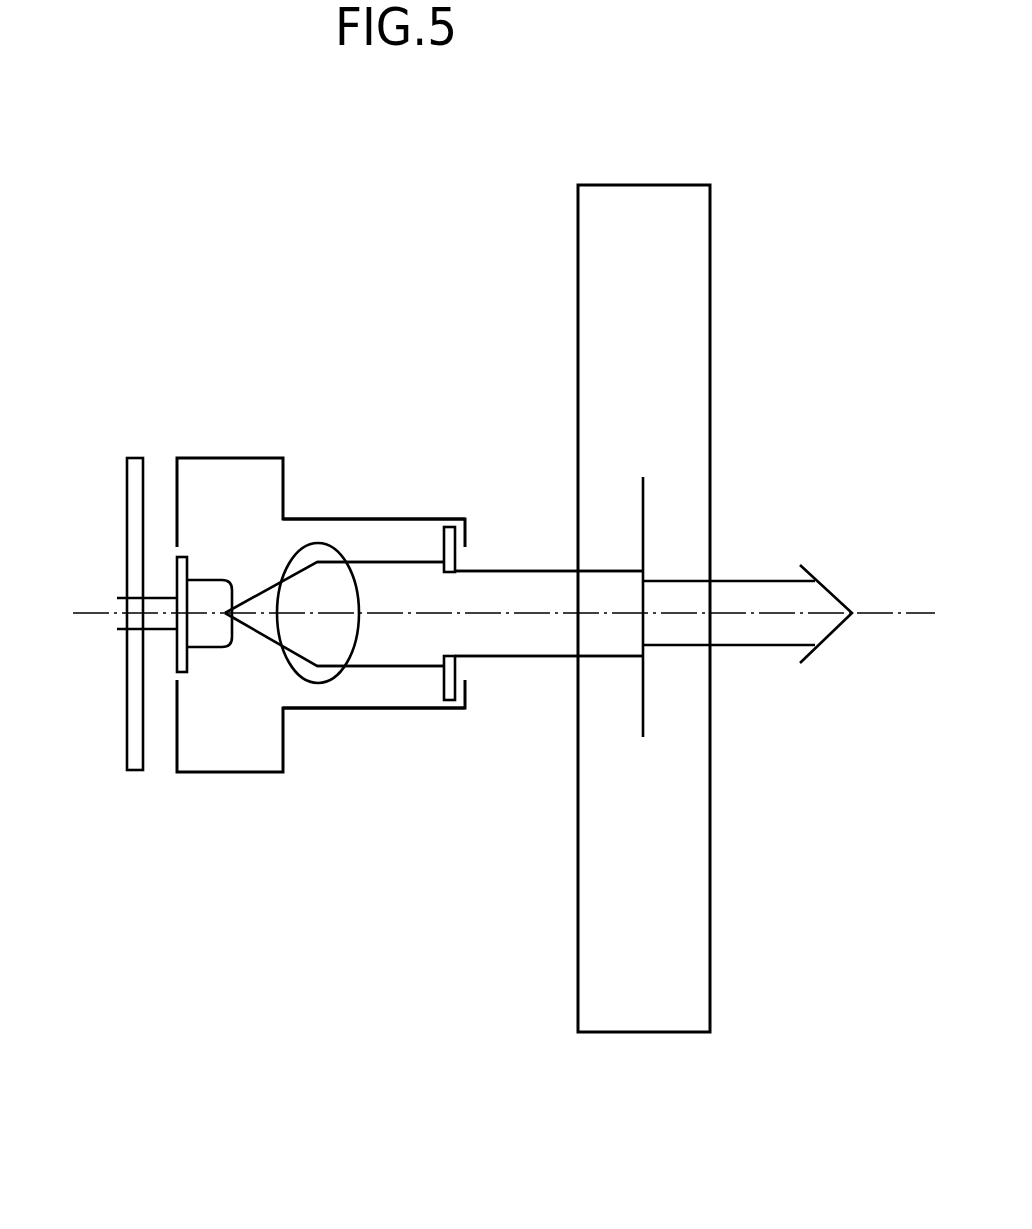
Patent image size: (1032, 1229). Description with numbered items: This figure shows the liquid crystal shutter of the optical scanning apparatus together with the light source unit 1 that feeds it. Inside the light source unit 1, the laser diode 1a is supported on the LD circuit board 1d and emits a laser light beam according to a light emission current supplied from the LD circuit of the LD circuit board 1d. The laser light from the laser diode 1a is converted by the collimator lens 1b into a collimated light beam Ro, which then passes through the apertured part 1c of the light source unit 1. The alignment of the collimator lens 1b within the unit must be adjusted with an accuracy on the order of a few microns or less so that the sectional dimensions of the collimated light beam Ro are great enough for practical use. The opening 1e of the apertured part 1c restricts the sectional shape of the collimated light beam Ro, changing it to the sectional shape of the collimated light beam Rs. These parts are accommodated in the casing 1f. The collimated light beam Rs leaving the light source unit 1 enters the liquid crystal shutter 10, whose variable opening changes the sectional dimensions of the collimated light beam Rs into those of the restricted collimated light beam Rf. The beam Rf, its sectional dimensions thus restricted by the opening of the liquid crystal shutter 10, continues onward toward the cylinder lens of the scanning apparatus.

The light source unit 1 is at (275, 790).
The laser diode 1a is at (207, 648).
The collimator lens 1b is at (320, 545).
The apertured part 1c is at (447, 692).
The LD circuit board 1d is at (127, 510).
The opening 1e is at (451, 655).
The casing 1f is at (380, 519).
The liquid crystal shutter 10 is at (709, 262).
The collimated light beam Ro is at (405, 572).
The collimated light beam Rs is at (500, 600).
The collimated light beam Rf is at (738, 600).